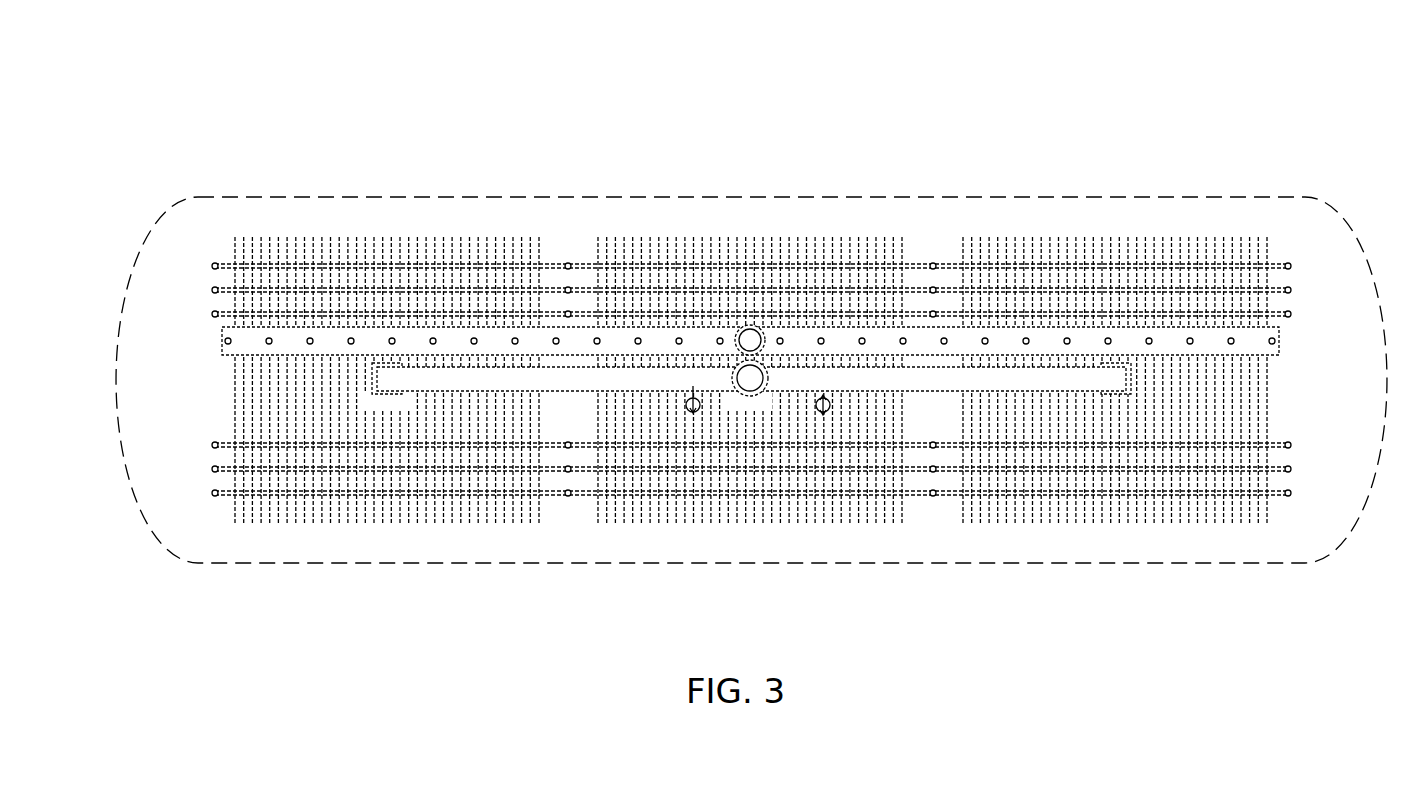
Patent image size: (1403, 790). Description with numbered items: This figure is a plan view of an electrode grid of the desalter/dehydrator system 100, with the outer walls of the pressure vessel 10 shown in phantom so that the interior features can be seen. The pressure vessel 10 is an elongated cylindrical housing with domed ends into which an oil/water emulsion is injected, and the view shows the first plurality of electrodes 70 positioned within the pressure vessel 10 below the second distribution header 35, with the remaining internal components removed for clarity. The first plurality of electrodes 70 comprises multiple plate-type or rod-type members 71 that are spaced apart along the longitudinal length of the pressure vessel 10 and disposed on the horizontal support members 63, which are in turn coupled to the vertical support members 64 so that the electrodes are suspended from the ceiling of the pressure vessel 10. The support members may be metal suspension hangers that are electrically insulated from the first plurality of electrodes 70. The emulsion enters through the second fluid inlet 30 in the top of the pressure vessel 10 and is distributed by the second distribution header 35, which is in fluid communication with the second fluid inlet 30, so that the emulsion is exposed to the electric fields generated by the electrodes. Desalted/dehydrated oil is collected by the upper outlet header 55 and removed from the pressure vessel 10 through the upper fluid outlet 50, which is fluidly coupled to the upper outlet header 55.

The system 100 is at (751, 330).
The pressure vessel 10 is at (1215, 195).
The first plurality of electrodes 70 is at (360, 226).
The plate-type or rod-type members 71 is at (461, 237).
The horizontal support members 63 is at (564, 262).
The vertical support members 64 is at (212, 290).
The upper outlet header 55 is at (1268, 333).
The second distribution header 35 is at (931, 368).
The upper fluid outlet 50 is at (745, 330).
The second fluid inlet 30 is at (754, 392).